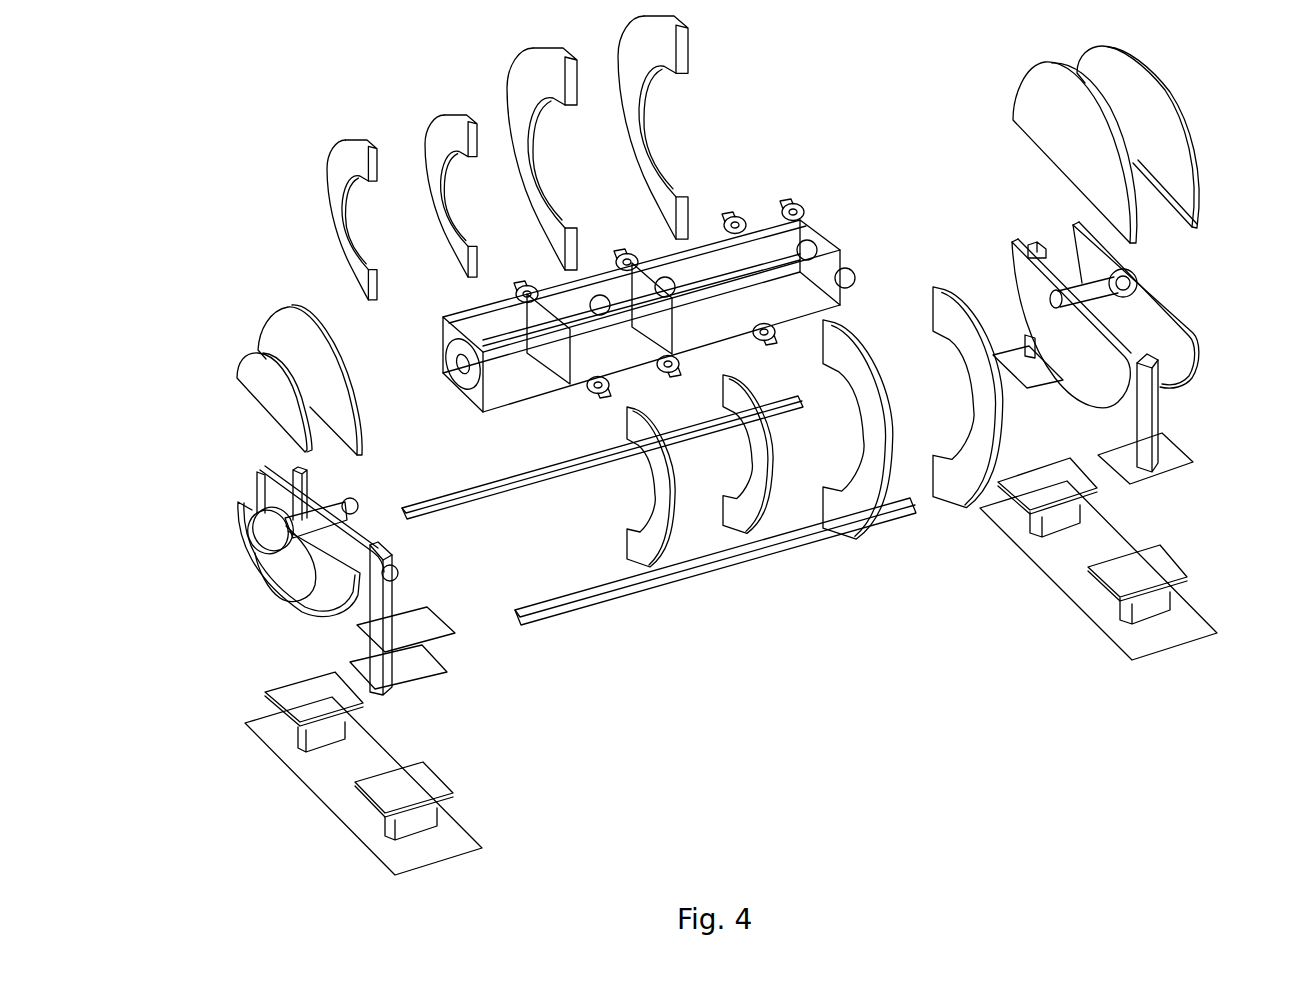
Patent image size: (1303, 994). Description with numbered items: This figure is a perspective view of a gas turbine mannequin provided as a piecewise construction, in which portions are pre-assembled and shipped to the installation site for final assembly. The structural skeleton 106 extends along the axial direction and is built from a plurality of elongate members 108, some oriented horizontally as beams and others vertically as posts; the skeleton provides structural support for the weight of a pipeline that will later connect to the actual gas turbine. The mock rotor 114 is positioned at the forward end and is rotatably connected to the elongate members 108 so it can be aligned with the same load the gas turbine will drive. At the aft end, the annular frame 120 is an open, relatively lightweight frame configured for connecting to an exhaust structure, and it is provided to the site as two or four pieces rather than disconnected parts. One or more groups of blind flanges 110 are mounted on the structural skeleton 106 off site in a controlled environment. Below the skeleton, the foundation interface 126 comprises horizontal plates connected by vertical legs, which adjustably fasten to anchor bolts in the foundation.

The structural skeleton 106 is at (208, 230).
The elongate members 108 is at (698, 560).
The blind flanges 110 is at (596, 393).
The mock rotor 114 is at (265, 540).
The annular frame 120 is at (1205, 79).
The foundation interface 126 is at (360, 826).